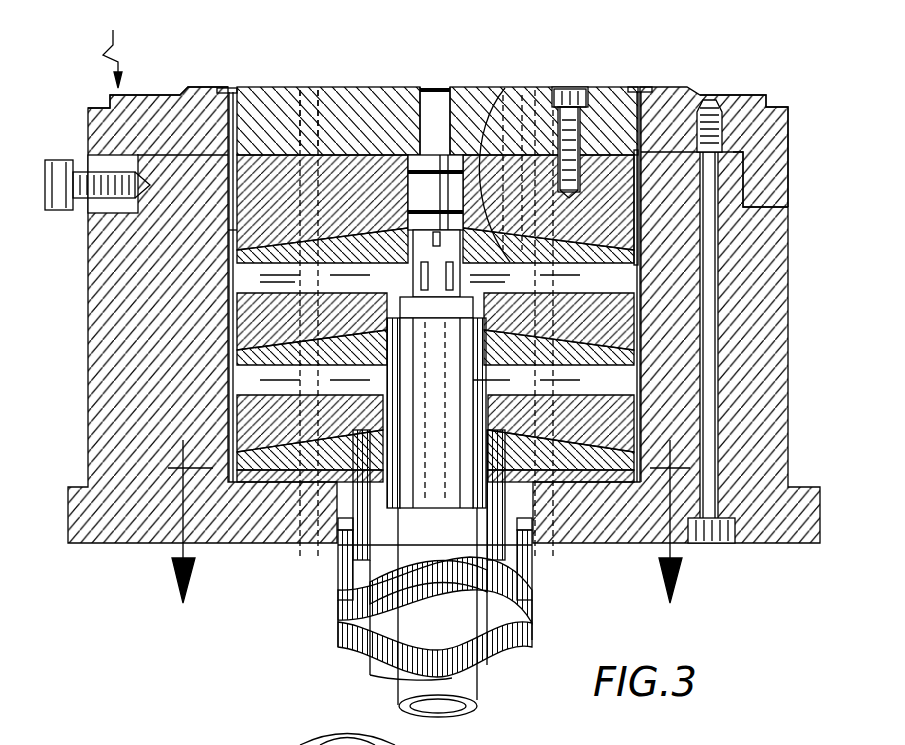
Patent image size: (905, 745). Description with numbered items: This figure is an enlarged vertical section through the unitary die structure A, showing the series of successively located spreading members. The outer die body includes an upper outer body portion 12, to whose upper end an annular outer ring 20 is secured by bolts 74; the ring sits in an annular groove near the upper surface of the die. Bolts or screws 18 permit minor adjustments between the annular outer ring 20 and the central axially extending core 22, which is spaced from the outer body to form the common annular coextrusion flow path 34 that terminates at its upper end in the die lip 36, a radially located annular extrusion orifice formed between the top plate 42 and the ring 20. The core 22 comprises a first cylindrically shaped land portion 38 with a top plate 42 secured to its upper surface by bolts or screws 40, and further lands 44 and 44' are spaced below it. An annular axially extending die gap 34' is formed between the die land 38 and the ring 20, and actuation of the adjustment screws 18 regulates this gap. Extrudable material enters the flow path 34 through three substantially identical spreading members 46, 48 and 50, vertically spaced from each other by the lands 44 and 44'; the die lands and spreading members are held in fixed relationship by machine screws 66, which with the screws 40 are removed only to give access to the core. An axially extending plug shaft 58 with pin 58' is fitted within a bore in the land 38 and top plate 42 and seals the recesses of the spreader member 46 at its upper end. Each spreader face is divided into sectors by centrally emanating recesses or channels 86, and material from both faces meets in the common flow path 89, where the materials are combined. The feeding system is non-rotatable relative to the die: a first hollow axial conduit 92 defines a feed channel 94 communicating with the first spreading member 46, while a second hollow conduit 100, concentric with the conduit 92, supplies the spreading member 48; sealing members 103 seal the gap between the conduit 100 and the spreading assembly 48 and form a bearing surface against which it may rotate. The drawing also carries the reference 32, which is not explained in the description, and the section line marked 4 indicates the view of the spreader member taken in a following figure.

The unitary die structure A is at (112, 48).
The section line 4 is at (429, 504).
The upper outer body portion 12 is at (172, 185).
The adjustment screws 18 is at (62, 160).
The annular outer ring 20 is at (96, 108).
The central axially extending core 22 is at (372, 182).
The bore 32 is at (502, 88).
The common annular coextrusion flow path 34 is at (767, 301).
The annular axially extending die gap 34' is at (136, 253).
The die lip 36 is at (231, 90).
The first cylindrically shaped land portion 38 is at (436, 96).
The bolts or screws 40 is at (572, 92).
The top plate 42 is at (322, 108).
The land 44 is at (524, 414).
The land 44' is at (540, 362).
The spreading member 46 is at (642, 258).
The spreading member 48 is at (642, 332).
The spreading member 50 is at (642, 420).
The plug shaft 58 is at (480, 145).
The pin 58' is at (555, 138).
The machine screws 66 is at (298, 100).
The bolts 74 is at (748, 180).
The recesses or channels 86 is at (330, 740).
The common flow path 89 is at (228, 345).
The first hollow axial conduit 92 is at (338, 600).
The feed channel 94 is at (505, 560).
The second hollow conduit 100 is at (528, 645).
The sealing members 103 is at (642, 300).